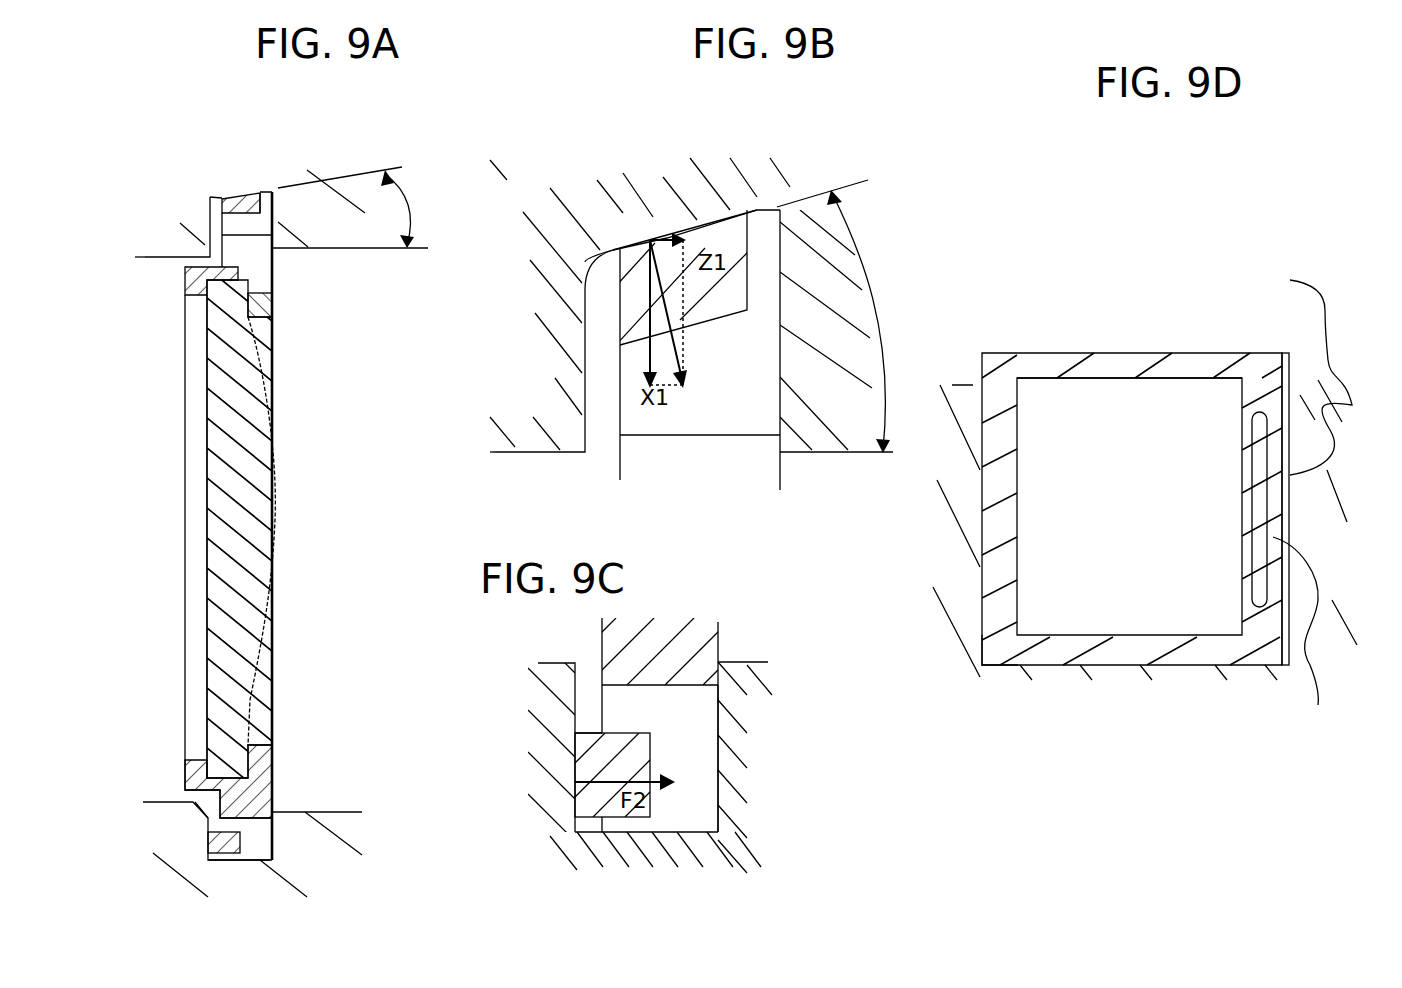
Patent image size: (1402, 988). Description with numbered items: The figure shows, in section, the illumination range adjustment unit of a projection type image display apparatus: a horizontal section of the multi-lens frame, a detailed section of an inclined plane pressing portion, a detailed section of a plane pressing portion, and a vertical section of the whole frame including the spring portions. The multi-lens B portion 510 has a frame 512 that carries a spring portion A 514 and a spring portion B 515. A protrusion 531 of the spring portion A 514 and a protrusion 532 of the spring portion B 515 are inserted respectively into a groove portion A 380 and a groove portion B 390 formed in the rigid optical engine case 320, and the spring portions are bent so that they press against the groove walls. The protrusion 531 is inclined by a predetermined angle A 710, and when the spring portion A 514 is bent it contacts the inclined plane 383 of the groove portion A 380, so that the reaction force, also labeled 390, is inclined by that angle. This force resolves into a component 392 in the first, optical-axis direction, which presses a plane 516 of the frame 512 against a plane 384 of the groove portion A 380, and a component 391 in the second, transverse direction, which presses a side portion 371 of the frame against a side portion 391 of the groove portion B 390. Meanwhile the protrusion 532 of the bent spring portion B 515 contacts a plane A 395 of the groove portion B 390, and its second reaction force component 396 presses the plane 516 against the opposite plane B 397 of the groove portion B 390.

In FIG. 9A, the optical engine case 320 is at (177, 250).
In FIG. 9B, the optical engine case 320 is at (558, 420).
In FIG. 9D, the side portion of the multi-lens frame 371 is at (1003, 577).
In FIG. 9A, the groove portion A 380 is at (213, 212).
In FIG. 9B, the groove portion A 380 is at (600, 357).
In FIG. 9A, the inclined plane 383 is at (242, 198).
In FIG. 9B, the inclined plane 383 is at (640, 248).
In FIG. 9A, the plane of the groove portion 384 is at (273, 220).
In FIG. 9B, the plane of the groove portion 384 is at (780, 315).
In FIG. 9A, the groove portion B 390 is at (273, 853).
In FIG. 9B, the groove portion B 390 is at (710, 412).
In FIG. 9C, the groove portion B 390 is at (680, 813).
In FIG. 9B, the component in X1 direction 391 is at (653, 413).
In FIG. 9D, the component in X1 direction 391 is at (975, 620).
In FIG. 9B, the component in Z1 direction 392 is at (747, 255).
In FIG. 9C, the plane A 395 is at (573, 690).
In FIG. 9C, the reaction force F2 component 396 is at (642, 807).
In FIG. 9A, the plane B 397 is at (270, 823).
In FIG. 9C, the plane B 397 is at (718, 717).
In FIG. 9A, the multi-lens B portion 510 is at (238, 522).
In FIG. 9D, the multi-lens B portion 510 is at (1088, 403).
In FIG. 9A, the frame 512 is at (197, 292).
In FIG. 9D, the frame 512 is at (1017, 648).
In FIG. 9A, the spring portion A 514 is at (242, 225).
In FIG. 9B, the spring portion A 514 is at (765, 340).
In FIG. 9D, the spring portion A 514 is at (1318, 705).
In FIG. 9A, the spring portion B 515 is at (240, 828).
In FIG. 9C, the spring portion B 515 is at (690, 752).
In FIG. 9A, the plane of the multi-lens frame 516 is at (262, 230).
In FIG. 9B, the plane of the multi-lens frame 516 is at (785, 445).
In FIG. 9C, the plane of the multi-lens frame 516 is at (719, 642).
In FIG. 9A, the protrusion of spring portion A 531 is at (246, 194).
In FIG. 9B, the protrusion of spring portion A 531 is at (720, 222).
In FIG. 9D, the protrusion of spring portion A 531 is at (1290, 280).
In FIG. 9A, the protrusion of spring portion B 532 is at (210, 855).
In FIG. 9C, the protrusion of spring portion B 532 is at (588, 770).
In FIG. 9A, the predetermined angle A 710 is at (425, 208).
In FIG. 9B, the predetermined angle A 710 is at (903, 307).